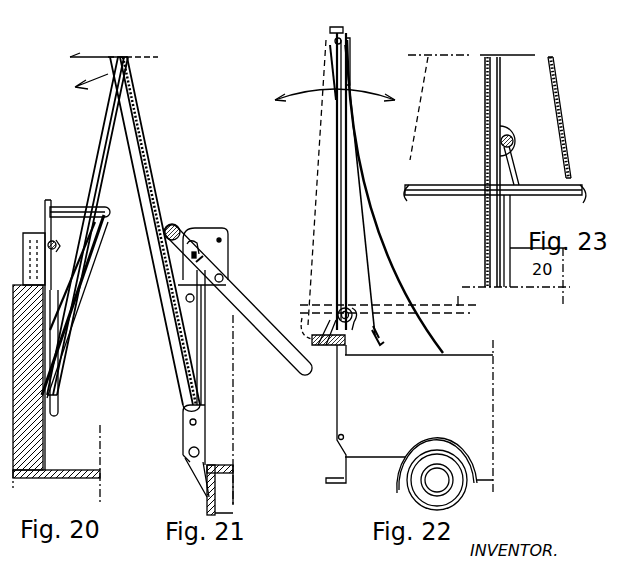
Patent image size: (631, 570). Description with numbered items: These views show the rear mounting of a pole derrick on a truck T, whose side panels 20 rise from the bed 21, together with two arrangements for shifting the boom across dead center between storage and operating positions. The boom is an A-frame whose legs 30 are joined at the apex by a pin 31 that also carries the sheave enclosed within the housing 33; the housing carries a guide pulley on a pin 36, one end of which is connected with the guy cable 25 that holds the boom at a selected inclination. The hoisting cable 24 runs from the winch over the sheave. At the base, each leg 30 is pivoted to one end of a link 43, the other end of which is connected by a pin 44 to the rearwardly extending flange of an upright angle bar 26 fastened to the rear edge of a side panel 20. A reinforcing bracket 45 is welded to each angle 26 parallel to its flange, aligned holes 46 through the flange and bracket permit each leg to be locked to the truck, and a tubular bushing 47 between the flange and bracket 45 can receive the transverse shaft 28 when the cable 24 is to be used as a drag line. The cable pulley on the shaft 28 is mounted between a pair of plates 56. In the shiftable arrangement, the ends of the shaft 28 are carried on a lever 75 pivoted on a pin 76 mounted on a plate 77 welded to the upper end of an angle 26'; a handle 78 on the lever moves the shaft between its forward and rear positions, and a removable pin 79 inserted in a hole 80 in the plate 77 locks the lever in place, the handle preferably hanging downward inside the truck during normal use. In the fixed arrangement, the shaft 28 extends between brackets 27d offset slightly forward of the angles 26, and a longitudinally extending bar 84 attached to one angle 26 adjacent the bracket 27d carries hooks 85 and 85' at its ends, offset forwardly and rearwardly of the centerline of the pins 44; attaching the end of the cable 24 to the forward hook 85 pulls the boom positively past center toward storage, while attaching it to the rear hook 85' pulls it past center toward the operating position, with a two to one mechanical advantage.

In FIG. 20, the side panel 20 is at (43, 441).
In FIG. 22, the side panel 20 is at (449, 394).
In FIG. 21, the bed 21 is at (224, 466).
In FIG. 22, the hoisting cable 24 is at (320, 239).
In FIG. 23, the hoisting cable 24 is at (426, 98).
In FIG. 22, the guy cable 25 is at (432, 331).
In FIG. 22, the angle bar 26 is at (321, 414).
In FIG. 23, the angle bar 26 is at (523, 241).
In FIG. 21, the angle 26' is at (220, 366).
In FIG. 22, the bracket 27d is at (345, 310).
In FIG. 23, the bracket 27d is at (513, 136).
In FIG. 20, the transverse shaft 28 is at (60, 206).
In FIG. 21, the transverse shaft 28 is at (172, 224).
In FIG. 23, the transverse shaft 28 is at (512, 147).
In FIG. 20, the leg 30 is at (92, 120).
In FIG. 21, the leg 30 is at (143, 112).
In FIG. 22, the leg 30 is at (336, 107).
In FIG. 23, the leg 30 is at (500, 86).
In FIG. 22, the pin 31 is at (342, 43).
In FIG. 22, the housing 33 is at (344, 29).
In FIG. 22, the pin 36 is at (351, 67).
In FIG. 21, the link 43 is at (200, 331).
In FIG. 21, the pin 44 is at (207, 304).
In FIG. 22, the pin 44 is at (348, 368).
In FIG. 21, the reinforcing bracket 45 is at (206, 437).
In FIG. 21, the aligned holes 46 is at (197, 420).
In FIG. 22, the aligned holes 46 is at (345, 421).
In FIG. 21, the tubular bushing 47 is at (189, 458).
In FIG. 22, the tubular bushing 47 is at (345, 436).
In FIG. 22, the plate 56 is at (354, 310).
In FIG. 20, the lever 75 is at (44, 214).
In FIG. 21, the lever 75 is at (188, 236).
In FIG. 20, the pin 76 is at (72, 283).
In FIG. 21, the pin 76 is at (224, 278).
In FIG. 20, the plate 77 is at (34, 232).
In FIG. 21, the plate 77 is at (185, 280).
In FIG. 20, the handle 78 is at (56, 348).
In FIG. 21, the handle 78 is at (285, 352).
In FIG. 20, the removable pin 79 is at (57, 243).
In FIG. 21, the removable pin 79 is at (194, 243).
In FIG. 21, the hole 80 is at (221, 240).
In FIG. 23, the bar 84 is at (467, 192).
In FIG. 22, the hook 85 is at (387, 327).
In FIG. 23, the hook 85 is at (598, 196).
In FIG. 22, the hook 85' is at (296, 324).
In FIG. 23, the hook 85' is at (419, 205).
In FIG. 22, the truck T is at (489, 396).